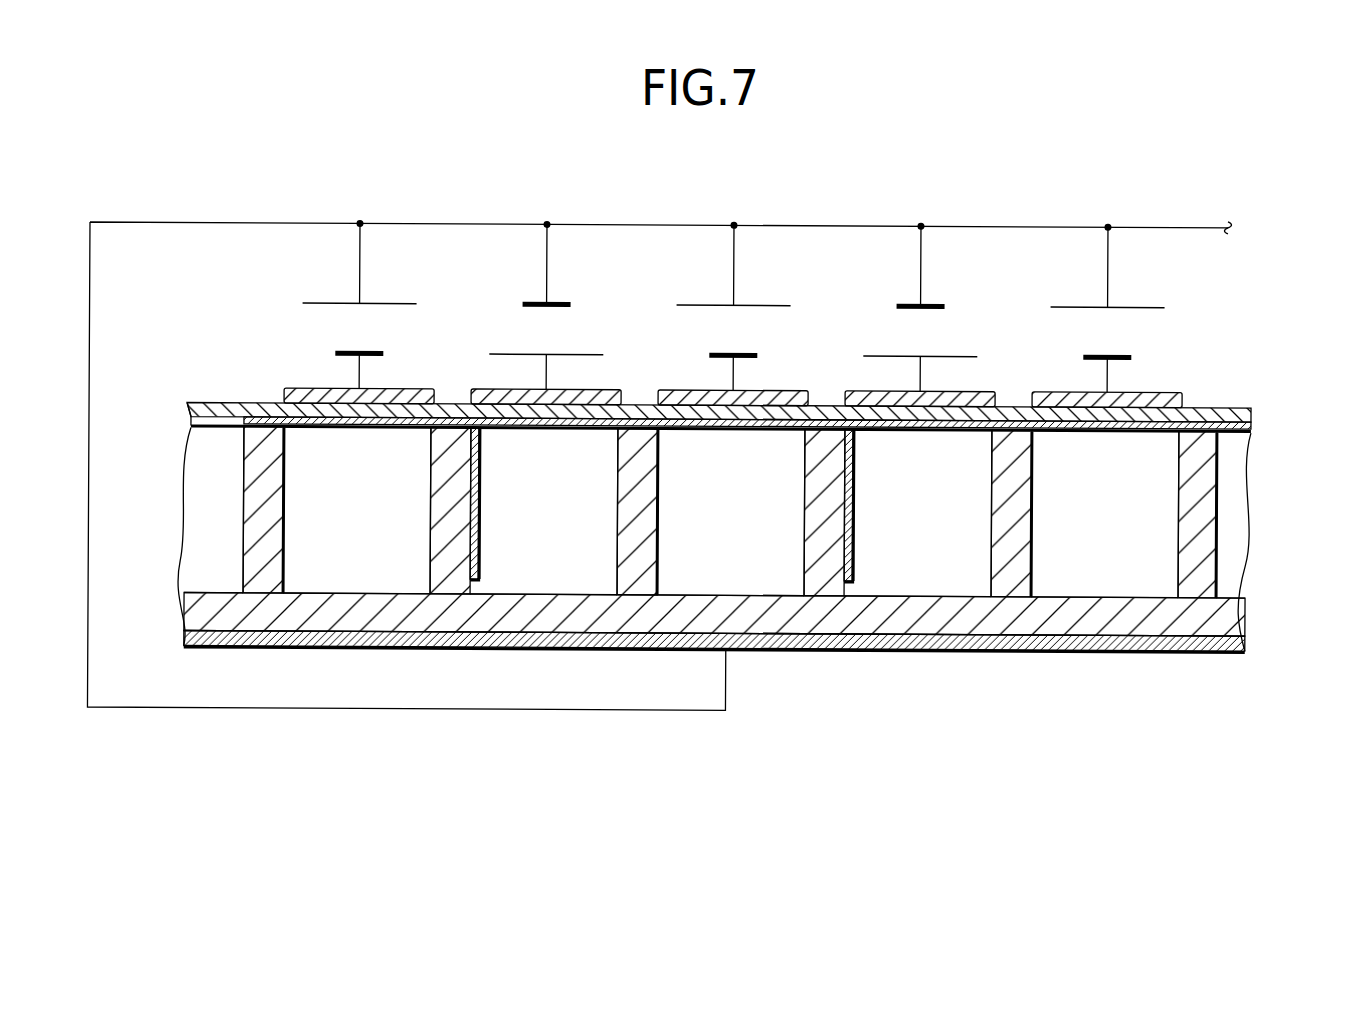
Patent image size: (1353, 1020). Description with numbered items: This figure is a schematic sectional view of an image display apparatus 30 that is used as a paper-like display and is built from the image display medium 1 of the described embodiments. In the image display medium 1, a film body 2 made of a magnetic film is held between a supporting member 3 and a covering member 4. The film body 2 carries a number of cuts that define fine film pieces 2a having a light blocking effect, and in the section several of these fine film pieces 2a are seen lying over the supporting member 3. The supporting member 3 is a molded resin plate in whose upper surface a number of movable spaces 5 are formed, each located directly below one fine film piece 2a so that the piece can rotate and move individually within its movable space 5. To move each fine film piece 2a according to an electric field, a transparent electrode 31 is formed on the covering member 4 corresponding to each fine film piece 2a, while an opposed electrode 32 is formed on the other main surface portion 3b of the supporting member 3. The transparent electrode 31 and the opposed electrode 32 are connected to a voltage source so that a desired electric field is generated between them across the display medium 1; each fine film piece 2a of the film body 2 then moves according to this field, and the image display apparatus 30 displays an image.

The image display medium 1 is at (1250, 376).
The film body 2 is at (1232, 432).
The fine film piece 2a is at (483, 488).
The supporting member 3 is at (1223, 618).
The other main surface portion 3b is at (1000, 650).
The covering member 4 is at (1153, 390).
The movable space 5 is at (640, 492).
The image display apparatus 30 is at (1224, 193).
The transparent electrode 31 is at (400, 387).
The opposed electrode 32 is at (868, 650).